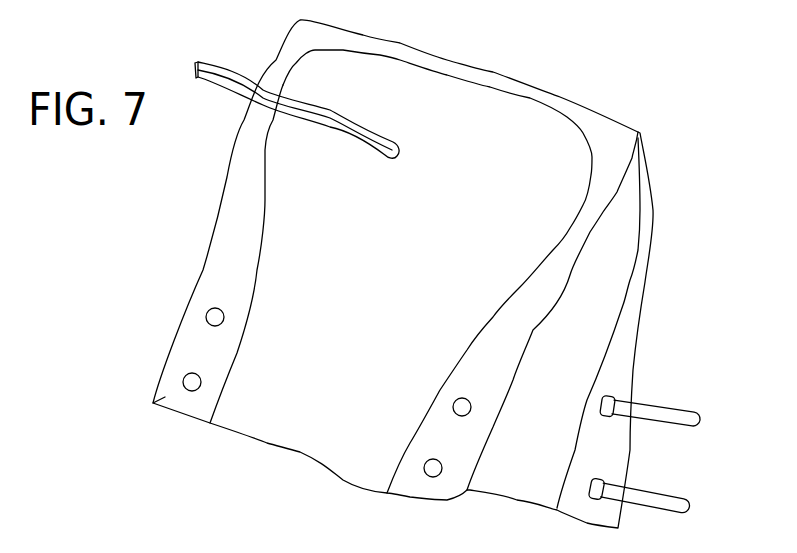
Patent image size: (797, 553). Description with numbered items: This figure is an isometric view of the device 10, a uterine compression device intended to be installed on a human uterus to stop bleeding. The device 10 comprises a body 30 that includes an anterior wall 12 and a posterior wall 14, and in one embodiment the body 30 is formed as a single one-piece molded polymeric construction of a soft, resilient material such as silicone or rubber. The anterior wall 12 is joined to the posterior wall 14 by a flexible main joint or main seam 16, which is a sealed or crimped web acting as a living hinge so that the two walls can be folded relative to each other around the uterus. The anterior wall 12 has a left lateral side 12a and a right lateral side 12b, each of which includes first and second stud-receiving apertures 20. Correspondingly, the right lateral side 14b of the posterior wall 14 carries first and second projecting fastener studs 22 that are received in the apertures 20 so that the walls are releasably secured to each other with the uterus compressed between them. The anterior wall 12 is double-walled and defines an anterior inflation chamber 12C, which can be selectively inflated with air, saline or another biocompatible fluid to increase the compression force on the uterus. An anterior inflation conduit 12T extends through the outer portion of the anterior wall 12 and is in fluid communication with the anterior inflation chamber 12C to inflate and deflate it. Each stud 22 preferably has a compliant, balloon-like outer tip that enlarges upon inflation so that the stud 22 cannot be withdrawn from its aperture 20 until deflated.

The device 10 is at (342, 209).
The anterior wall 12 is at (250, 415).
The left lateral side of anterior wall 12a is at (152, 403).
The right lateral side of anterior wall 12b is at (483, 413).
The anterior inflation chamber 12C is at (317, 433).
The anterior inflation conduit 12T is at (224, 70).
The posterior wall 14 is at (590, 322).
The right lateral side of posterior wall 14b is at (618, 457).
The main joint or main seam 16 is at (562, 97).
The stud-receiving aperture 20 is at (207, 312).
The fastener stud 22 is at (680, 407).
The body 30 is at (633, 183).